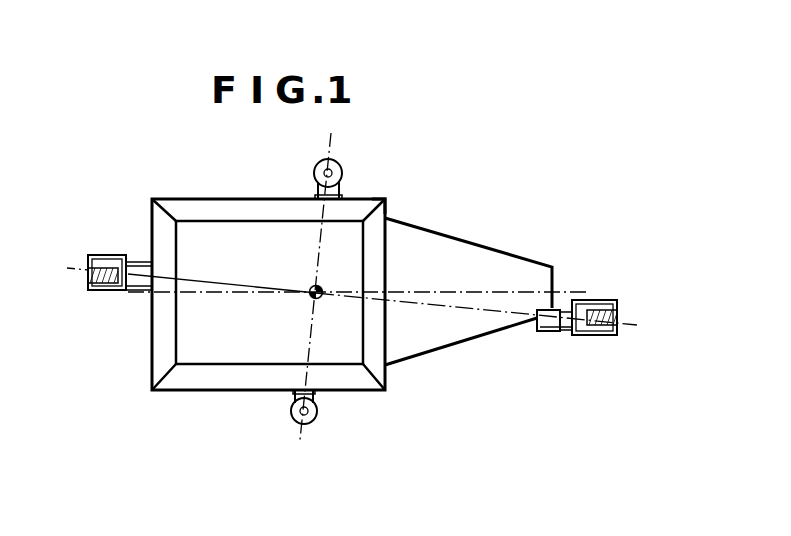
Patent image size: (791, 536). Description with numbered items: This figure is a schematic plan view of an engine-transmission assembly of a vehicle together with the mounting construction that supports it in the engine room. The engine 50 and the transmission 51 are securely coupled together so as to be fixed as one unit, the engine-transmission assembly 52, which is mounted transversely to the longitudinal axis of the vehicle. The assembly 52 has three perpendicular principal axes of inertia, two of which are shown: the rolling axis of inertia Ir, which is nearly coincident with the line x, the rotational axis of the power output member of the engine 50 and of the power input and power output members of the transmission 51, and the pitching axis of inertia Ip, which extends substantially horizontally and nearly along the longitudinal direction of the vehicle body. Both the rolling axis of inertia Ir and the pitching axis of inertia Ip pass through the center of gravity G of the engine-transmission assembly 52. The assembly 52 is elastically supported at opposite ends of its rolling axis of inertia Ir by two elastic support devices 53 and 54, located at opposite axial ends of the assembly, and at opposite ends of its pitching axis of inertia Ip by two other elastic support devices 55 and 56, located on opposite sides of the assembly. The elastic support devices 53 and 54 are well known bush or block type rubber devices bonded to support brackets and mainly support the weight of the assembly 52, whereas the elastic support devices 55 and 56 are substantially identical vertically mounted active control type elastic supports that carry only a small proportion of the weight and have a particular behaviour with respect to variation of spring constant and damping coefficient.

The engine 50 is at (222, 232).
The transmission 51 is at (487, 250).
The engine-transmission assembly 52 is at (385, 199).
The elastic support device 53 is at (90, 264).
The elastic support device 54 is at (617, 318).
The elastic support device 55 is at (318, 412).
The elastic support device 56 is at (342, 170).
The center of gravity G is at (310, 296).
The pitching axis of inertia Ip is at (313, 270).
The rolling axis of inertia Ir is at (468, 309).
The rotational axis of the power output member x is at (575, 287).